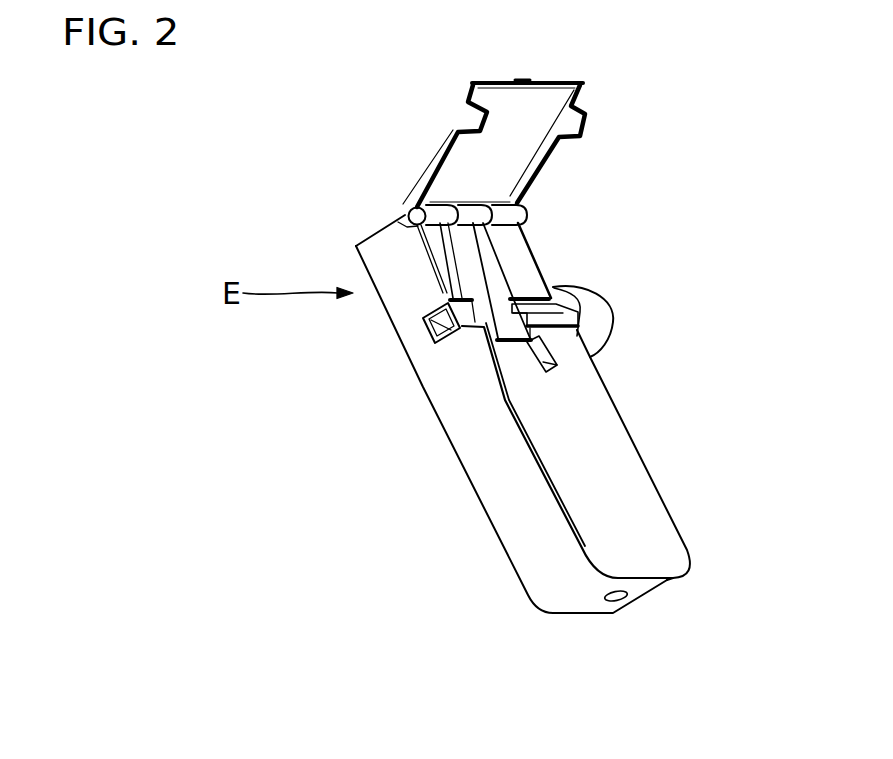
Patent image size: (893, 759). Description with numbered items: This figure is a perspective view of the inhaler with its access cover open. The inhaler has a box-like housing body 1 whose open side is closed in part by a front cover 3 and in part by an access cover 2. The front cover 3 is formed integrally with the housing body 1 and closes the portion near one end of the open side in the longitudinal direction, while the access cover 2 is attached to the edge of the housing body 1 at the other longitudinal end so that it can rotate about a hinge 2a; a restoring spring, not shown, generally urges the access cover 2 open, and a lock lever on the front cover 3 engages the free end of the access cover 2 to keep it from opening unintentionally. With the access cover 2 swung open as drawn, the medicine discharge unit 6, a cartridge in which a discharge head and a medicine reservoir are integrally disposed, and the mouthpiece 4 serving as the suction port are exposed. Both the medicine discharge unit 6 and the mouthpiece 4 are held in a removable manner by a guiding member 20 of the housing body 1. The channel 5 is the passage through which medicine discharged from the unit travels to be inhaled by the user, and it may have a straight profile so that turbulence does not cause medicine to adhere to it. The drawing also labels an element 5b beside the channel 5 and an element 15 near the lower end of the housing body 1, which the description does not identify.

The housing body 1 is at (497, 497).
The access cover 2 is at (628, 148).
The hinge 2a is at (438, 196).
The guiding member 20 is at (623, 216).
The medicine discharge unit 6 is at (637, 256).
The mouthpiece 4 is at (662, 311).
The channel 5 is at (673, 363).
The engaging claw 5b is at (427, 332).
The front cover 3 is at (698, 458).
The hole 15 is at (618, 640).